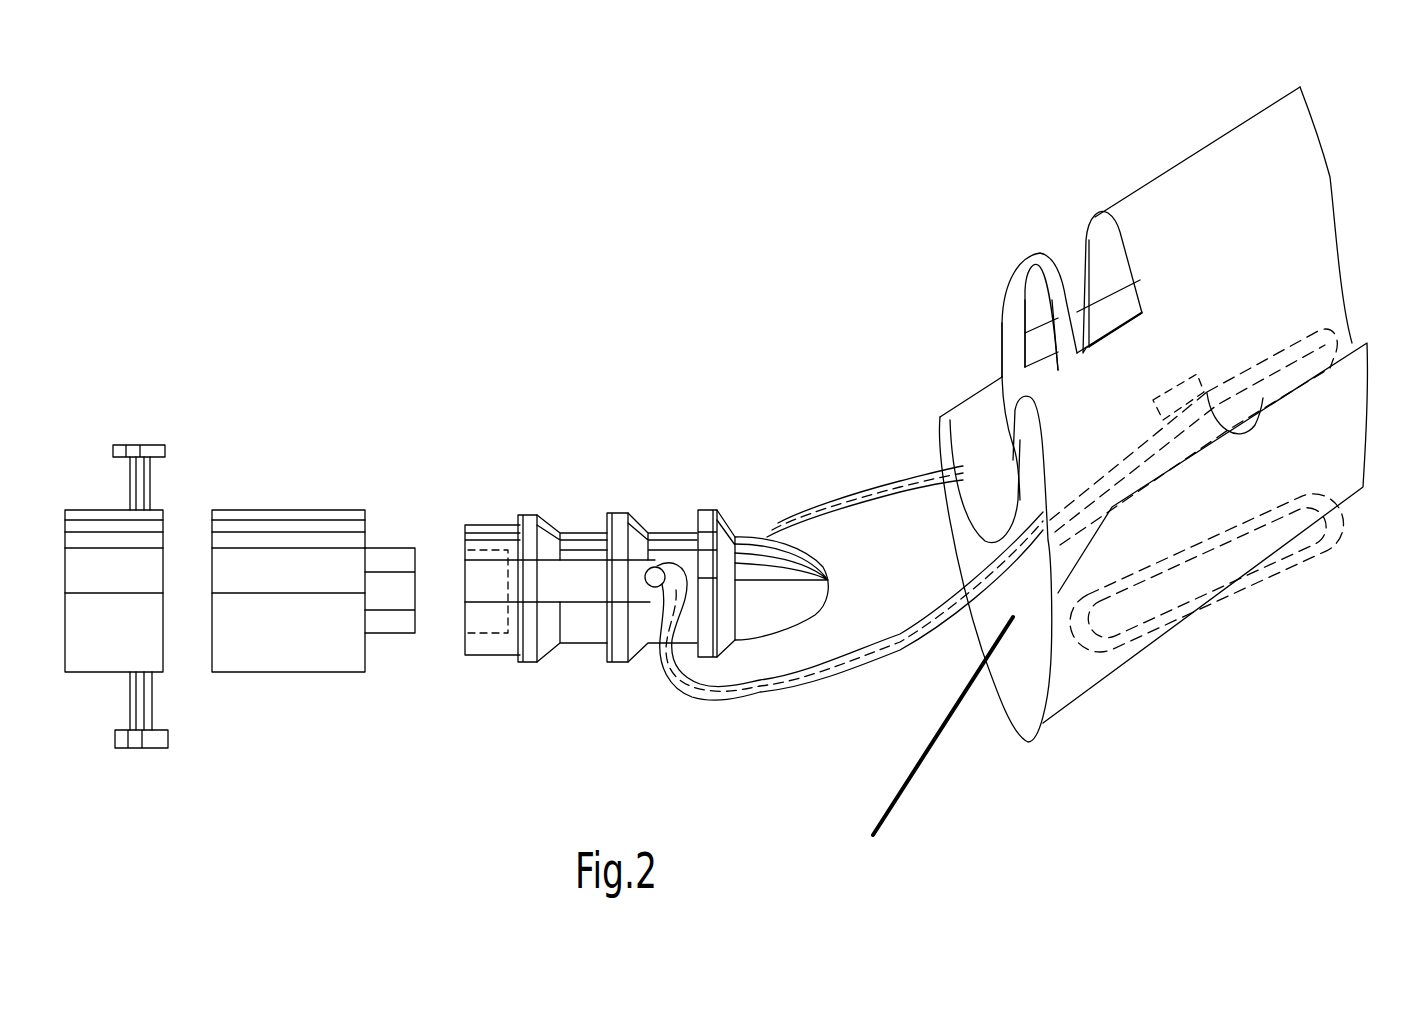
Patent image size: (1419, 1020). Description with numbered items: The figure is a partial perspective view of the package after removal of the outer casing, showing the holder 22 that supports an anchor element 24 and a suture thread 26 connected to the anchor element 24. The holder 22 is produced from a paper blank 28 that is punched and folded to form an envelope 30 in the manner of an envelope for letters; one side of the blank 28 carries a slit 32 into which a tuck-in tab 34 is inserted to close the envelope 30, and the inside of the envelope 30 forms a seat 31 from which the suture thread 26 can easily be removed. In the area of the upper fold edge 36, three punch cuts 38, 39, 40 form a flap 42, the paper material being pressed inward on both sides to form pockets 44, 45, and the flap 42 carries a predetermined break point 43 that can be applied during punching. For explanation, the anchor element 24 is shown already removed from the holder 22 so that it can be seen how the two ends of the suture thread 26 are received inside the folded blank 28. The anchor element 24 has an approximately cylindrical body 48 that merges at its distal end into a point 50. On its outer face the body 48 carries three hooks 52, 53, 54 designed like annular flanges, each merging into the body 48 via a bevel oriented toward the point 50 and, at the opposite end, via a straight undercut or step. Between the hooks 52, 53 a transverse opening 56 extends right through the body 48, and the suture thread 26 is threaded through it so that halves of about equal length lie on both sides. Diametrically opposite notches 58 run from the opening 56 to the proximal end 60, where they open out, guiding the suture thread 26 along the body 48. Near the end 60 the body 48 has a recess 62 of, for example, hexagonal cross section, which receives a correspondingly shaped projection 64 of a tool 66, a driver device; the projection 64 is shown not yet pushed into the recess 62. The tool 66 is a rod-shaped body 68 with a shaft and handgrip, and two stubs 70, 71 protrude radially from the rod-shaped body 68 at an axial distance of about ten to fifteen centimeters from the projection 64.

The holder 22 is at (1134, 122).
The anchor element 24 is at (585, 455).
The suture thread 26 is at (878, 672).
The paper blank 28 is at (1337, 181).
The envelope 30 is at (1015, 703).
The seat 31 is at (925, 752).
The slit 32 is at (1207, 390).
The tuck-in tab 34 is at (1173, 388).
The upper fold edge 36 is at (1223, 130).
The punch cut 38 is at (1087, 227).
The punch cut 39 is at (1057, 252).
The punch cut 40 is at (1000, 307).
The flap 42 is at (1015, 290).
The predetermined break point 43 is at (1055, 287).
The pocket 44 is at (992, 503).
The pocket 45 is at (1107, 307).
The cylindrical body 48 is at (668, 535).
The point 50 is at (830, 560).
The hook 52 is at (712, 518).
The hook 53 is at (620, 512).
The hook 54 is at (527, 515).
The transverse opening 56 is at (647, 575).
The notch 58 is at (580, 593).
The proximal end 60 is at (463, 527).
The recess 62 is at (484, 620).
The projection 64 is at (390, 558).
The tool 66 is at (279, 408).
The rod-shaped body 68 is at (320, 523).
The stub 70 is at (145, 478).
The stub 71 is at (152, 702).